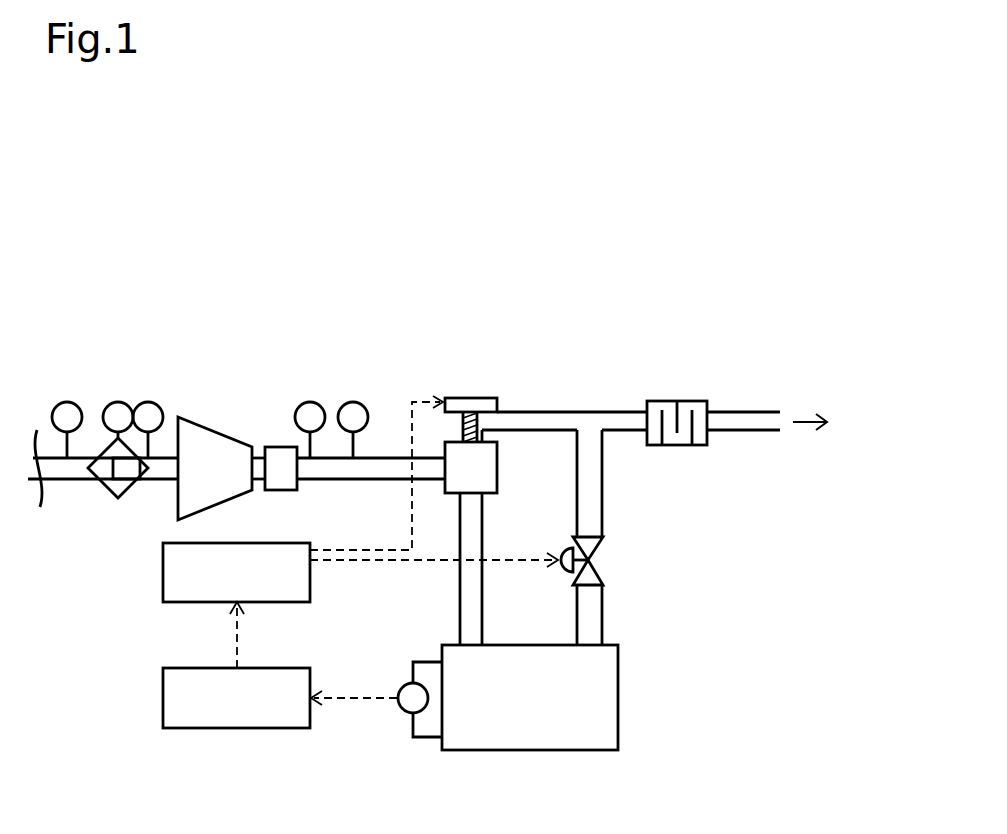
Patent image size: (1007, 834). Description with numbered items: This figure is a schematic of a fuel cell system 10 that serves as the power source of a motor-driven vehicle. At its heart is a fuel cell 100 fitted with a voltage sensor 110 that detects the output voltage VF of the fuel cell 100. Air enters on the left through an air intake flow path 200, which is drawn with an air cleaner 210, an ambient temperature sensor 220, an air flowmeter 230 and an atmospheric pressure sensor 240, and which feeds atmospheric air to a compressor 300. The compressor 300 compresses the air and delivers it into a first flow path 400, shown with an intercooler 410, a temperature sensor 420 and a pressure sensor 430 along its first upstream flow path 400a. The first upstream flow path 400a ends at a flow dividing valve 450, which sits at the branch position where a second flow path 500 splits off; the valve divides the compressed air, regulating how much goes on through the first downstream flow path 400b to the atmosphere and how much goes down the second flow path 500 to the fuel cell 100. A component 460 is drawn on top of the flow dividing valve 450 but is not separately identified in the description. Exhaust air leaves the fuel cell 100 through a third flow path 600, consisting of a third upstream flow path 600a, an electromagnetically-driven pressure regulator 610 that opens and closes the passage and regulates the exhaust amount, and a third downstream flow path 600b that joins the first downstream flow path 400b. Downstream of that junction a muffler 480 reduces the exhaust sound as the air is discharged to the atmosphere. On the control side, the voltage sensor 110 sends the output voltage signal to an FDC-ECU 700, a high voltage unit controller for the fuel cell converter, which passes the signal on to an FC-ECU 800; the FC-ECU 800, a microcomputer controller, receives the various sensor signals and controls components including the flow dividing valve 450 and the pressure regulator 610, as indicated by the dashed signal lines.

The fuel cell system 10 is at (302, 298).
The fuel cell 100 is at (530, 750).
The voltage sensor 110 is at (397, 710).
The air intake flow path 200 is at (170, 503).
The air cleaner 210 is at (101, 452).
The ambient temperature sensor 220 is at (118, 402).
The air flowmeter 230 is at (155, 402).
The atmospheric pressure sensor 240 is at (65, 402).
The compressor 300 is at (215, 432).
The first flow path 400 is at (472, 372).
The first upstream flow path 400a is at (392, 457).
The first downstream flow path 400b is at (564, 375).
The intercooler 410 is at (278, 447).
The temperature sensor 420 is at (310, 402).
The pressure sensor 430 is at (353, 402).
The flow dividing valve 450 is at (497, 467).
The valve actuator 460 is at (470, 398).
The muffler 480 is at (700, 401).
The second flow path 500 is at (482, 627).
The third flow path 600 is at (672, 537).
The third upstream flow path 600a is at (610, 618).
The third downstream flow path 600b is at (602, 507).
The pressure regulator 610 is at (599, 547).
The FDC-ECU 700 is at (185, 730).
The FC-ECU 800 is at (185, 602).